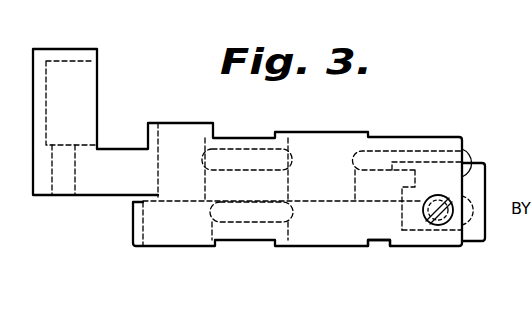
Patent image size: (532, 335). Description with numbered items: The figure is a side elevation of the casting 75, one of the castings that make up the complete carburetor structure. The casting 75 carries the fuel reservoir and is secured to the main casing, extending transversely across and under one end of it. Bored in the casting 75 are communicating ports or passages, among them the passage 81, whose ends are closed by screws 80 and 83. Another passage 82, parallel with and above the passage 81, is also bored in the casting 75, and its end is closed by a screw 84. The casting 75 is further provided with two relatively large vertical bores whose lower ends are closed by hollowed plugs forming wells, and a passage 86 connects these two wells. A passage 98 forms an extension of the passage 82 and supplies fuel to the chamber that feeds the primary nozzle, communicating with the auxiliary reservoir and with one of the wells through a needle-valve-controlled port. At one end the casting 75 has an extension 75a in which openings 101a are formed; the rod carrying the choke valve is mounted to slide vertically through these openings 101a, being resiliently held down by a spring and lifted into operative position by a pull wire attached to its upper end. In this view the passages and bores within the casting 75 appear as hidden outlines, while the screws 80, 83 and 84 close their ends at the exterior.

The casting 75 is at (388, 134).
The extension of the casting 75a is at (77, 48).
The openings 101a is at (66, 184).
The passage 98 is at (241, 157).
The passage 82 is at (428, 155).
The screw 84 is at (471, 157).
The screw 83 is at (471, 205).
The screw 80 is at (440, 225).
The passage 86 is at (247, 210).
The passage 81 is at (383, 214).